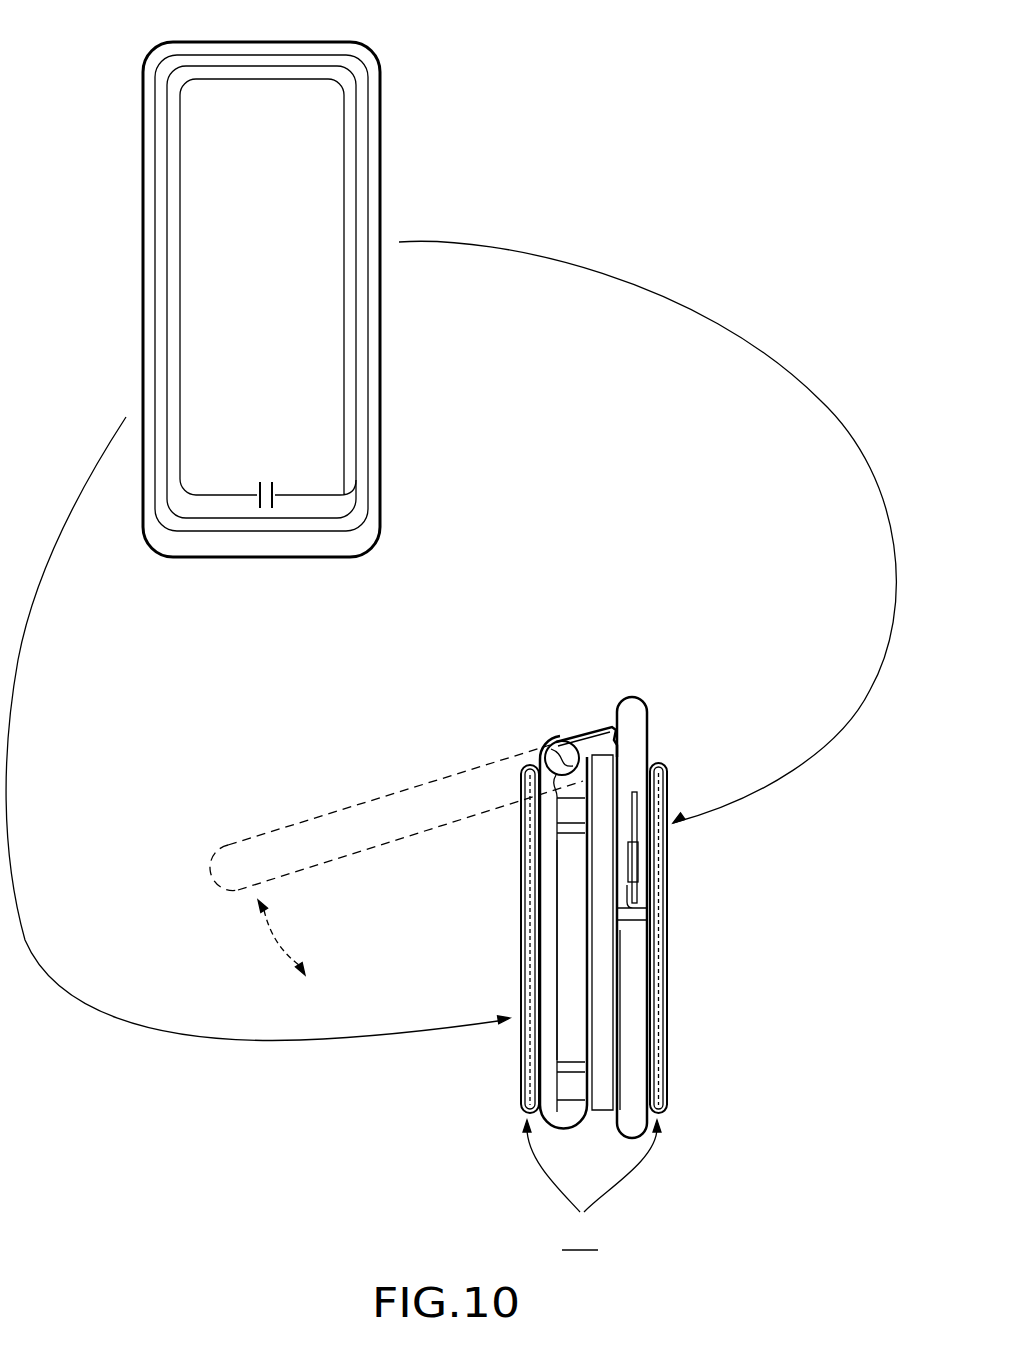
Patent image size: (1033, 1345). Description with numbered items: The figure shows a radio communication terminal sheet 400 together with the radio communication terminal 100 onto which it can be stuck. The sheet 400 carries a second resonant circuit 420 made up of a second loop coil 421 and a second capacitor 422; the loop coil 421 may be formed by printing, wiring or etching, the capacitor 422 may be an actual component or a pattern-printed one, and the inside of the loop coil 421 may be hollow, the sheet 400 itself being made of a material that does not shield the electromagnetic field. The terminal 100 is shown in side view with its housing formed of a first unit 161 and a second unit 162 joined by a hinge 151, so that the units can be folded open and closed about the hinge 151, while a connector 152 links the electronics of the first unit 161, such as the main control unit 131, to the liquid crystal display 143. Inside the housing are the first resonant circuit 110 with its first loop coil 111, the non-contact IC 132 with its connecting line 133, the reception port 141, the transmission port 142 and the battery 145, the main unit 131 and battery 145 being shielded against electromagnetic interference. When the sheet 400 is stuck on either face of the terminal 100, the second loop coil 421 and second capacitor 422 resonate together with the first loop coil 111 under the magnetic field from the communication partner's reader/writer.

The radio communication terminal 100 is at (457, 875).
The first resonant circuit 110 is at (712, 881).
The first loop coil 111 is at (638, 892).
The main control unit 131 is at (603, 760).
The non-contact IC 132 is at (645, 858).
The connecting line 133 is at (640, 910).
The reception port 141 is at (570, 1087).
The transmission port 142 is at (563, 813).
The liquid crystal display 143 is at (570, 947).
The battery 145 is at (628, 992).
The hinge 151 is at (529, 714).
The connector 152 is at (587, 730).
The first unit 161 is at (548, 893).
The second unit 162 is at (632, 755).
The radio communication terminal sheet 400 is at (398, 55).
The second resonant circuit 420 is at (429, 556).
The second loop coil 421 is at (152, 180).
The second capacitor 422 is at (267, 513).